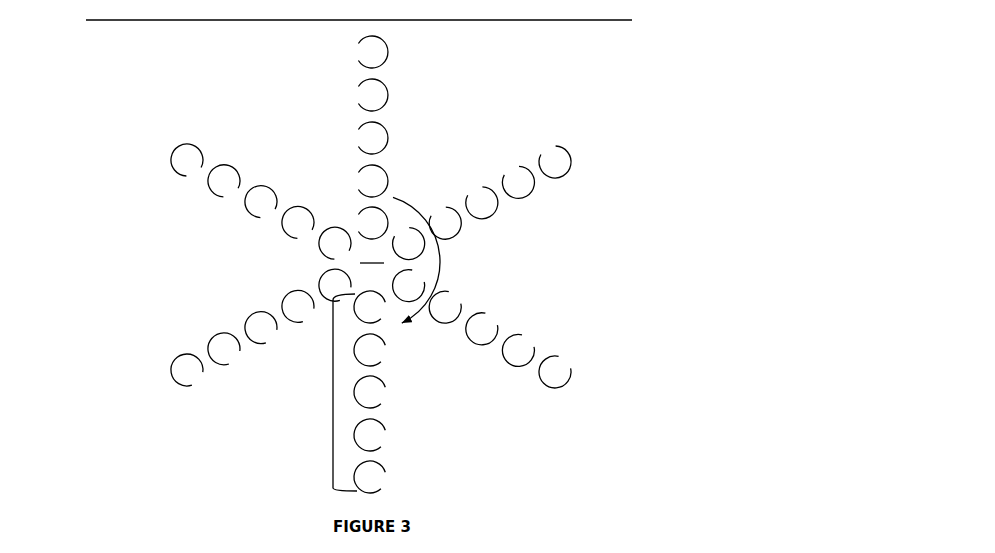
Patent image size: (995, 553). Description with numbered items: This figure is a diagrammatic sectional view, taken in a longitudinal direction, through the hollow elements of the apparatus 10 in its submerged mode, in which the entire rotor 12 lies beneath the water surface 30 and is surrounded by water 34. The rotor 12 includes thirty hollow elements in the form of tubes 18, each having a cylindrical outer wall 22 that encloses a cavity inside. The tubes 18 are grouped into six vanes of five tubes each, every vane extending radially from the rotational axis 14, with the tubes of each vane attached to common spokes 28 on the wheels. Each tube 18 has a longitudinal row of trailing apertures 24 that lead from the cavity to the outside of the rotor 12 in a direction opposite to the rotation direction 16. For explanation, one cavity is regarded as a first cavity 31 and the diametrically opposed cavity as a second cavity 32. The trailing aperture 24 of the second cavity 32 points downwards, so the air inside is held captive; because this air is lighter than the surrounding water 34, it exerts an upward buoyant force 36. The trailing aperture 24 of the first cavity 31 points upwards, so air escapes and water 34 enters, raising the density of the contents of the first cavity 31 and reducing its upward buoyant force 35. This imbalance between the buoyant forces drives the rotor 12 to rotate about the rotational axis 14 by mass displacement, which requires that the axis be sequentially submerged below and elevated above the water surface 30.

The assembly 10 is at (182, 118).
The rotor 12 is at (135, 272).
The rotational axis 14 is at (372, 268).
The rotation direction 16 is at (429, 260).
The tubes 18 is at (232, 171).
The cylindrical outer wall 22 is at (571, 158).
The trailing apertures 24 is at (201, 391).
The common spokes 28 is at (333, 393).
The water surface 30 is at (373, 18).
The first cavity 31 is at (561, 173).
The second cavity 32 is at (178, 376).
The water 34 is at (594, 272).
The upward buoyant force 35 is at (553, 146).
The upward buoyant force 36 is at (186, 352).